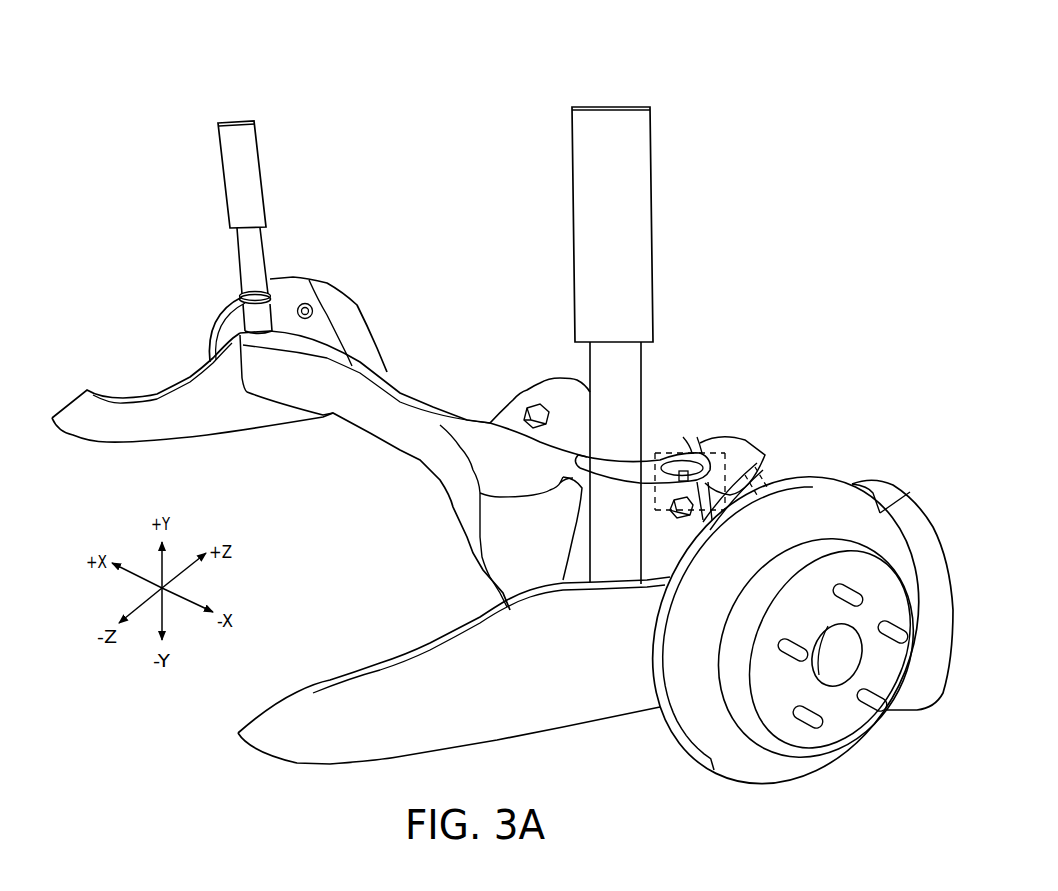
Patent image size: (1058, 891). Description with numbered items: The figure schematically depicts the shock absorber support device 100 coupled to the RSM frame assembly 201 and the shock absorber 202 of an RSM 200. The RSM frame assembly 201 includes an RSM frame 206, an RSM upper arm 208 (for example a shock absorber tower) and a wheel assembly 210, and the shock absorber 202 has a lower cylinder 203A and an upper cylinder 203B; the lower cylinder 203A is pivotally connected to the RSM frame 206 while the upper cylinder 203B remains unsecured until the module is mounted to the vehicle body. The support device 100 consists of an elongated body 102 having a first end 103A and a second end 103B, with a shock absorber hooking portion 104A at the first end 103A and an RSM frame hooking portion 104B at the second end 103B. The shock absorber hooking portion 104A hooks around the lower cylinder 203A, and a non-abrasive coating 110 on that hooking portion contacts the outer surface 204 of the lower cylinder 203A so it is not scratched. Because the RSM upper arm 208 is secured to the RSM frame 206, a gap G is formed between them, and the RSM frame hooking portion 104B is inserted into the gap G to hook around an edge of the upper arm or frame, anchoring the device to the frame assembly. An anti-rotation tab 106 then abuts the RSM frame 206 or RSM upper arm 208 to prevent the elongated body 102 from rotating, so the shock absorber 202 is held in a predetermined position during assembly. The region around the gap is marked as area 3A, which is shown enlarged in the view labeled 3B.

The RSM 200 is at (638, 92).
The RSM frame assembly 201 is at (772, 362).
The shock absorber 202 is at (687, 200).
The lower cylinder 203A is at (643, 370).
The upper cylinder 203B is at (650, 258).
The outer surface 204 is at (238, 243).
The shock absorber support device 100 is at (230, 295).
The elongated body 102 is at (647, 464).
The first end 103A is at (585, 517).
The second end 103B is at (650, 500).
The shock absorber hooking portion 104A is at (580, 452).
The RSM frame hooking portion 104B is at (707, 487).
The anti-rotation tab 106 is at (710, 463).
The non-abrasive coating 110 is at (566, 480).
The RSM frame 206 is at (547, 722).
The RSM upper arm 208 is at (685, 453).
The wheel assembly 210 is at (207, 327).
The gap G is at (724, 468).
The area 3A is at (752, 477).
The FIG. 3B is at (708, 482).